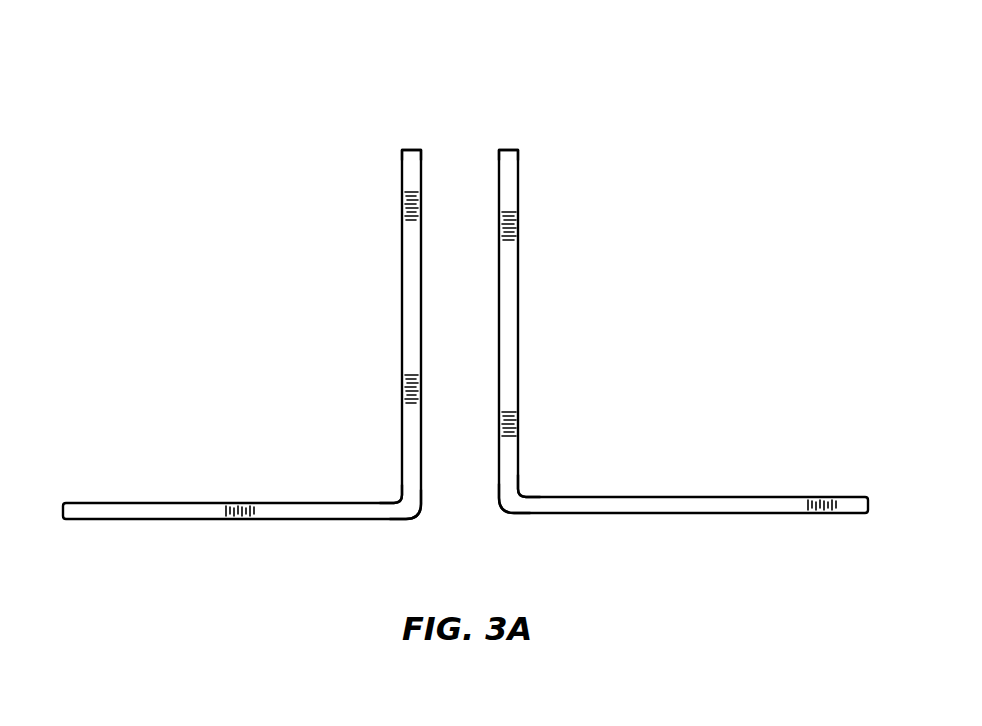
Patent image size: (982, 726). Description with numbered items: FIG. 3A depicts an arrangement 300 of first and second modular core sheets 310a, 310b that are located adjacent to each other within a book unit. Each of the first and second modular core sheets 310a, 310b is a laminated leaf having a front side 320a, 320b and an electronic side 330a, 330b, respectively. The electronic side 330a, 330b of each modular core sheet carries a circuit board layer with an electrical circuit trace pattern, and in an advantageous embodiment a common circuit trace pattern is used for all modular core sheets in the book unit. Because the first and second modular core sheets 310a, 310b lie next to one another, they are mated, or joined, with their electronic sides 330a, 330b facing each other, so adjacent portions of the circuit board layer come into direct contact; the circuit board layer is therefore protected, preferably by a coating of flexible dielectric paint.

The heat pipe assembly 300 is at (700, 102).
The first modular core sheet 310a is at (408, 150).
The second modular core sheet 310b is at (510, 150).
The front side 320a is at (265, 360).
The front side 320b is at (667, 352).
The electronic side 330a is at (415, 516).
The electronic side 330b is at (503, 512).